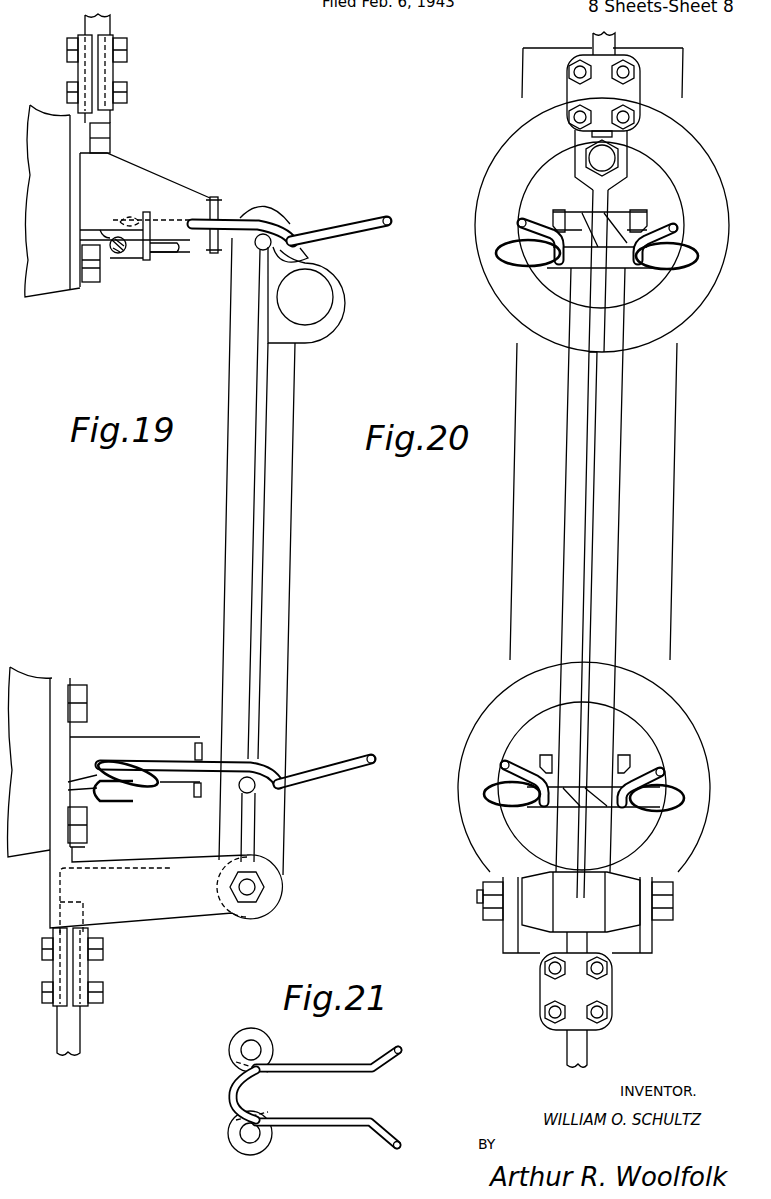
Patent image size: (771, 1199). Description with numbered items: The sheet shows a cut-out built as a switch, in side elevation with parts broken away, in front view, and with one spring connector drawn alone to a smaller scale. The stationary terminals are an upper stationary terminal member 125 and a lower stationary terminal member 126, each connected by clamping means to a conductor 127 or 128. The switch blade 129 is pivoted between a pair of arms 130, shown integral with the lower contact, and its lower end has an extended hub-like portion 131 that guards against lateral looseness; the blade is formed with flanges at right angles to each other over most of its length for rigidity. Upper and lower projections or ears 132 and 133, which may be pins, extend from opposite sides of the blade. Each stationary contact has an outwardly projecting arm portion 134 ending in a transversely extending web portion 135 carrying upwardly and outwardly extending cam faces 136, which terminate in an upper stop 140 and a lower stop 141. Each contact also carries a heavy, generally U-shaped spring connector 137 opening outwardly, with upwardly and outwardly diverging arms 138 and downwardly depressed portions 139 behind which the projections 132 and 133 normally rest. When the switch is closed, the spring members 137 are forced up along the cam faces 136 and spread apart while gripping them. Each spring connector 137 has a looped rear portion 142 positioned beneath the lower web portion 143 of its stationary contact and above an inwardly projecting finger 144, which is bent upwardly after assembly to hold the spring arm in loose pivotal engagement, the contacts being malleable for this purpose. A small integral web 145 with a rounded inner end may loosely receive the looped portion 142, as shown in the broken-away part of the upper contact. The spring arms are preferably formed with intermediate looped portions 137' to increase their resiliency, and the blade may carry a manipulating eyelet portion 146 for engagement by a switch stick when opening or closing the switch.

In FIG. 19, the upper stationary terminal member 125 is at (151, 170).
In FIG. 19, the lower stationary terminal member 126 is at (131, 734).
In FIG. 19, the upper conductor 127 is at (112, 31).
In FIG. 20, the upper conductor 127 is at (616, 48).
In FIG. 19, the lower conductor 128 is at (82, 1041).
In FIG. 20, the lower conductor 128 is at (589, 1053).
In FIG. 19, the switch blade 129 is at (248, 568).
In FIG. 20, the switch blade 129 is at (603, 582).
In FIG. 19, the arms 130 is at (187, 903).
In FIG. 20, the arms 130 is at (503, 940).
In FIG. 20, the hub-like portion 131 is at (627, 922).
In FIG. 19, the upper projection 132 is at (259, 248).
In FIG. 20, the upper projection 132 is at (542, 258).
In FIG. 19, the lower projection 133 is at (263, 793).
In FIG. 20, the lower projection 133 is at (530, 792).
In FIG. 19, the arm portion 134 is at (172, 195).
In FIG. 19, the web portion 135 is at (222, 205).
In FIG. 20, the web portion 135 is at (616, 212).
In FIG. 19, the cam faces 136 is at (226, 212).
In FIG. 20, the cam faces 136 is at (575, 212).
In FIG. 19, the spring connector 137 is at (211, 478).
In FIG. 21, the spring connector 137 is at (327, 1088).
In FIG. 19, the intermediate looped portions 137' is at (135, 515).
In FIG. 20, the intermediate looped portions 137' is at (591, 525).
In FIG. 21, the intermediate looped portions 137' is at (236, 1089).
In FIG. 19, the diverging arms 138 is at (361, 216).
In FIG. 20, the diverging arms 138 is at (517, 226).
In FIG. 21, the diverging arms 138 is at (398, 1140).
In FIG. 19, the downwardly depressed portions 139 is at (310, 258).
In FIG. 20, the downwardly depressed portions 139 is at (560, 262).
In FIG. 19, the upper stop 140 is at (215, 195).
In FIG. 20, the upper stop 140 is at (553, 214).
In FIG. 19, the lower stop 141 is at (210, 256).
In FIG. 19, the looped rear portion 142 is at (80, 244).
In FIG. 21, the looped rear portion 142 is at (230, 1093).
In FIG. 19, the lower web portion 143 is at (103, 228).
In FIG. 19, the finger 144 is at (104, 265).
In FIG. 19, the web 145 is at (134, 252).
In FIG. 19, the manipulating eyelet portion 146 is at (346, 313).
In FIG. 20, the manipulating eyelet portion 146 is at (607, 340).